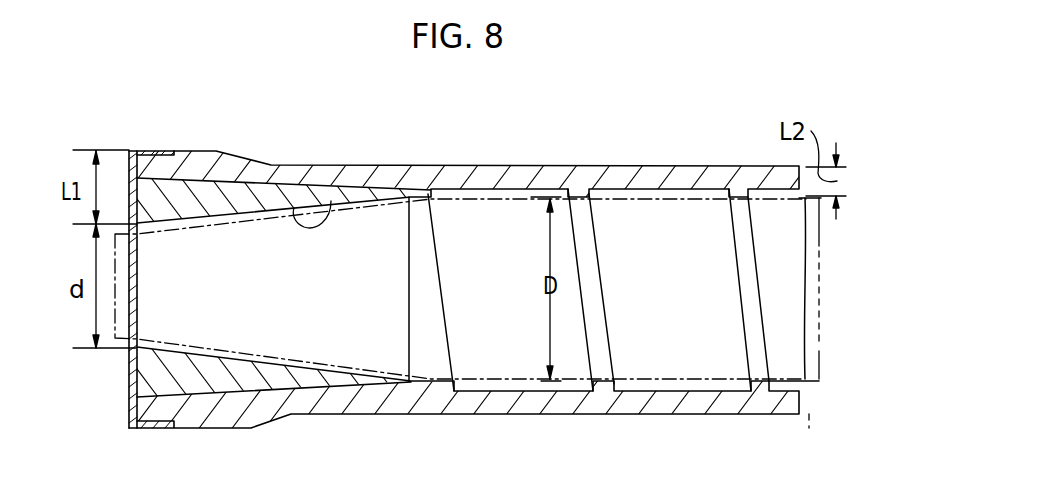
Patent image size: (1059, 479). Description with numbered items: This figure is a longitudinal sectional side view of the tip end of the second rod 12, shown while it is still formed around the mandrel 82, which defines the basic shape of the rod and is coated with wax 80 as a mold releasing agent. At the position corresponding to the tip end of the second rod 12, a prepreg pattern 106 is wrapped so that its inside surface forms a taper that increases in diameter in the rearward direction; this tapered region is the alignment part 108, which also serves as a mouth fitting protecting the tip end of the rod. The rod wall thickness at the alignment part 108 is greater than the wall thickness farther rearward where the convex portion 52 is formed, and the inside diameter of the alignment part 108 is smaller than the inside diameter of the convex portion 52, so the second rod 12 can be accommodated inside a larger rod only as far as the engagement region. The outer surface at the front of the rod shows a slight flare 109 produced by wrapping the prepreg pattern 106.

The second rod 12 is at (637, 165).
The convex portion 52 is at (736, 210).
The wax 80 is at (350, 368).
The mandrel 82 is at (808, 415).
The prepreg pattern 106 is at (201, 187).
The alignment part / mouth fitting 108 is at (330, 200).
The flare 109 is at (258, 410).